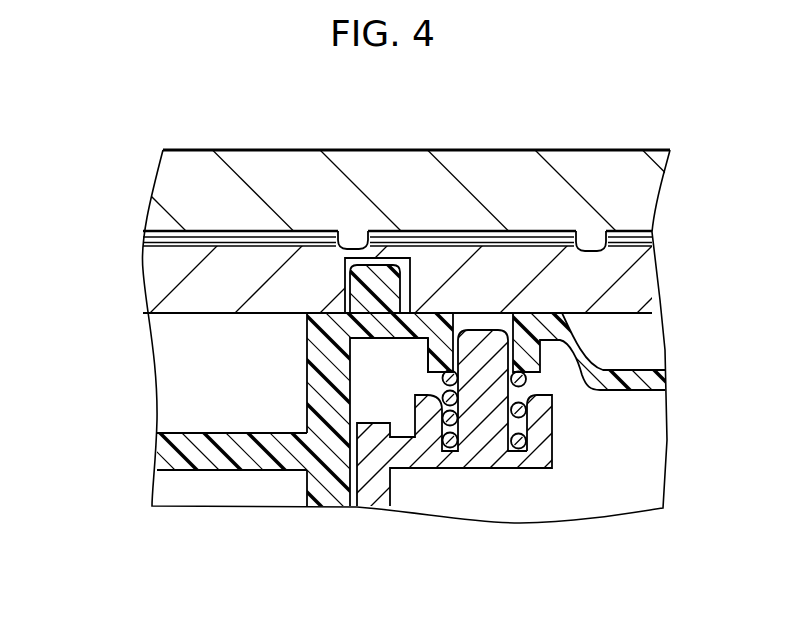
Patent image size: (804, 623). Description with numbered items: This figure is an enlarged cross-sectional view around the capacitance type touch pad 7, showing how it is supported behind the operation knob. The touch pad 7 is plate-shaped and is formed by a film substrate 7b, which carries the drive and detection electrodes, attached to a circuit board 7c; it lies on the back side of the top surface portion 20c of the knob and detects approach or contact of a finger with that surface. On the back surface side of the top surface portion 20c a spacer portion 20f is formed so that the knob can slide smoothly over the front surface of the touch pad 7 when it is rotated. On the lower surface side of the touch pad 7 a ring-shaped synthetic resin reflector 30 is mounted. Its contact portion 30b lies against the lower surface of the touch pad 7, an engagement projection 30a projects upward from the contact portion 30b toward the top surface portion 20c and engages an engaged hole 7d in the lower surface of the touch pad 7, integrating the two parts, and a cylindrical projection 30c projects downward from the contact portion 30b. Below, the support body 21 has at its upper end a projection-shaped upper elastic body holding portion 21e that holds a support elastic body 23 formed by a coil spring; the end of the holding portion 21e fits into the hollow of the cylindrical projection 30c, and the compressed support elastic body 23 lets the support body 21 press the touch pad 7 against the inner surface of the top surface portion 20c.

The top surface portion 20c is at (471, 163).
The spacer portion 20f is at (338, 232).
The capacitance type touch pad 7 is at (451, 312).
The film substrate 7b is at (630, 245).
The circuit board 7c is at (412, 270).
The engaged hole 7d is at (525, 300).
The reflector 30 is at (316, 385).
The engagement projection 30a is at (375, 275).
The contact portion 30b is at (455, 301).
The cylindrical projection 30c is at (437, 363).
The support body 21 is at (368, 506).
The upper elastic body holding portion 21e is at (488, 374).
The support elastic body 23 is at (553, 408).